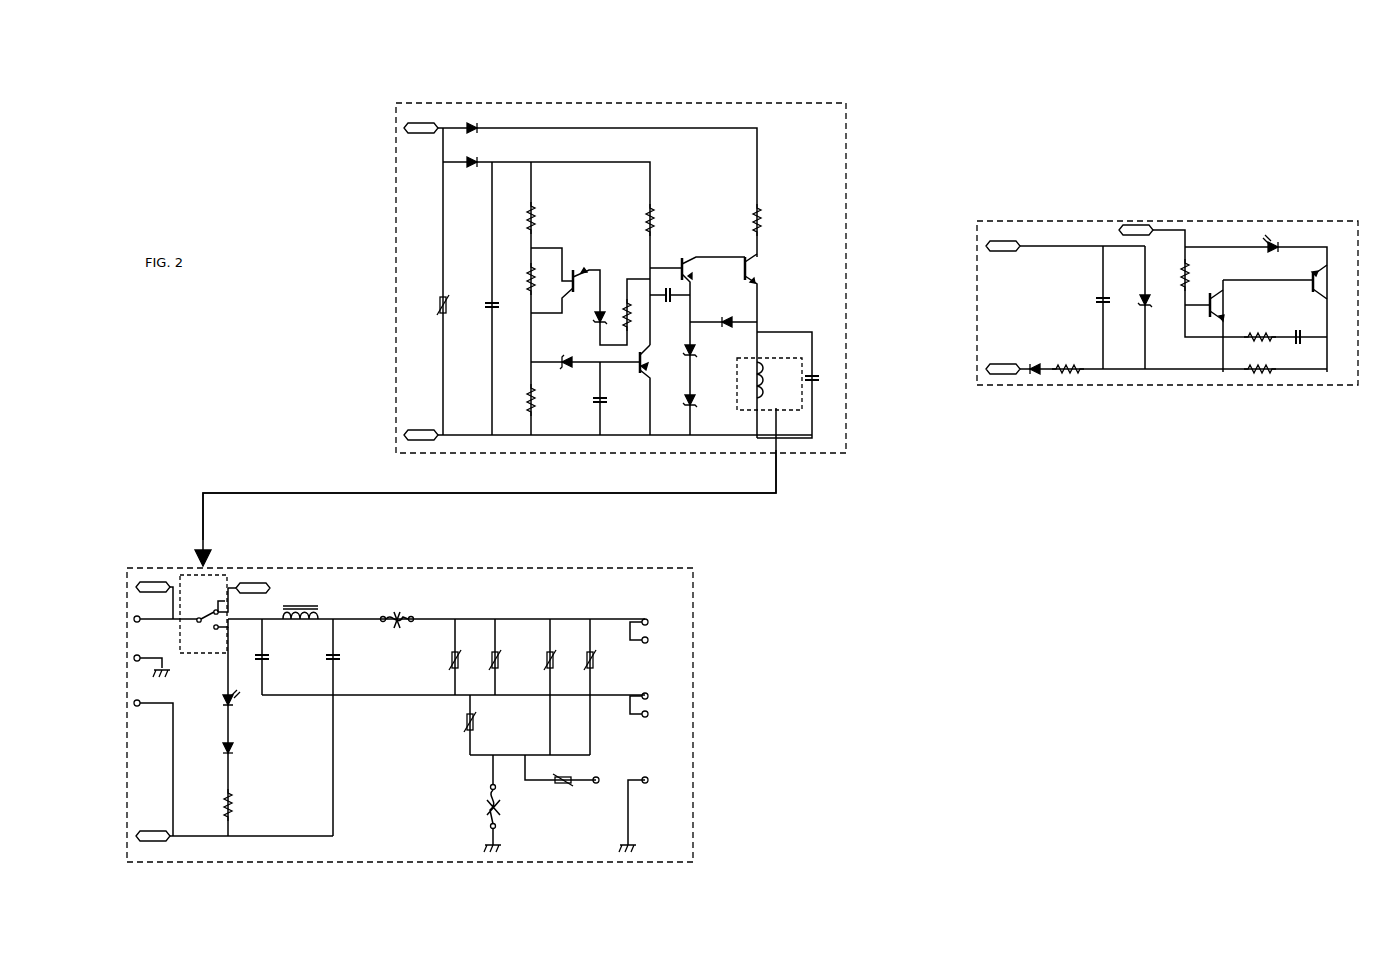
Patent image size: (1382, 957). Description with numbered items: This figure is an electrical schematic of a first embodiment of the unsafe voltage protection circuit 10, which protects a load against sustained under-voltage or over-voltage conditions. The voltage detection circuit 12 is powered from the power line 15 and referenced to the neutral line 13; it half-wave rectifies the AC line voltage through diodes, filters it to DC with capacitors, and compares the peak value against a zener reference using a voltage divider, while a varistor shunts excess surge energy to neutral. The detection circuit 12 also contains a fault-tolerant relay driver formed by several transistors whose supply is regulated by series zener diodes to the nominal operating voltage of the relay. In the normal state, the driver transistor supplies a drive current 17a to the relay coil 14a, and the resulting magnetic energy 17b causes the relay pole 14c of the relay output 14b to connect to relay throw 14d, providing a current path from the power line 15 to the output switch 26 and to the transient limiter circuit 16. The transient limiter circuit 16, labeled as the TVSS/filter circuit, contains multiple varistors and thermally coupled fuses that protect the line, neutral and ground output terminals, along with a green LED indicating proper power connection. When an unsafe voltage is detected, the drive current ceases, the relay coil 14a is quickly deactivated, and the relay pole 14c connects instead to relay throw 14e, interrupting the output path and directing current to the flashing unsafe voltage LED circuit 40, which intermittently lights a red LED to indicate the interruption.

The unsafe voltage protection circuit 10 is at (968, 81).
The voltage detection circuit 12 is at (597, 95).
The neutral line 13 is at (400, 435).
The relay coil 14a is at (790, 415).
The relay output 14b is at (183, 562).
The relay pole 14c is at (205, 618).
The relay throw 14d is at (232, 621).
The relay throw 14e is at (214, 604).
The power line 15 is at (400, 128).
The transient limiter circuit 16 is at (110, 574).
The drive current 17a is at (758, 345).
The magnetic energy 17b is at (628, 506).
The output switch 26 is at (697, 580).
The flashing unsafe voltage LED circuit 40 is at (1085, 192).